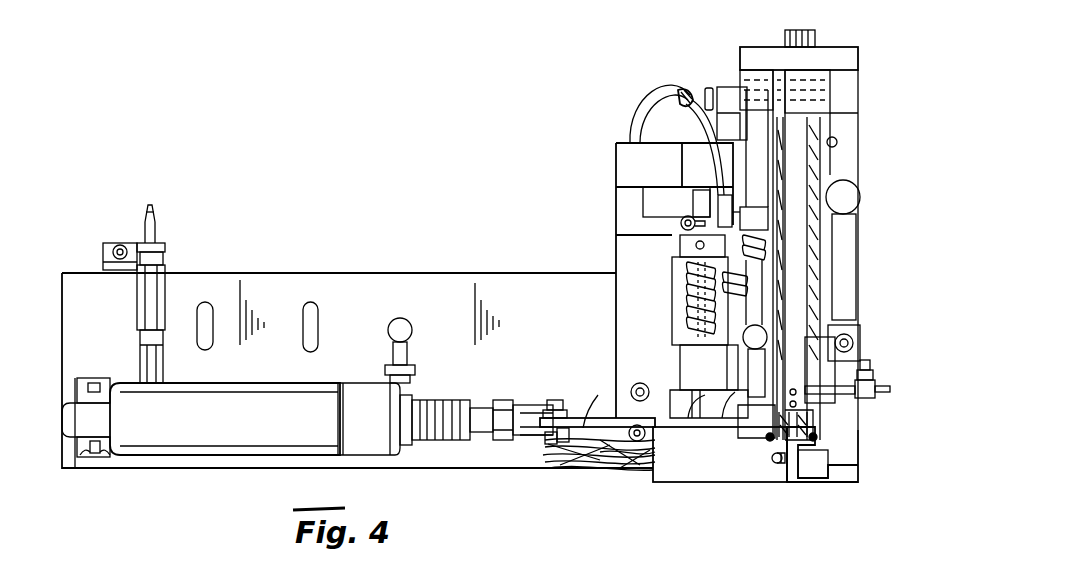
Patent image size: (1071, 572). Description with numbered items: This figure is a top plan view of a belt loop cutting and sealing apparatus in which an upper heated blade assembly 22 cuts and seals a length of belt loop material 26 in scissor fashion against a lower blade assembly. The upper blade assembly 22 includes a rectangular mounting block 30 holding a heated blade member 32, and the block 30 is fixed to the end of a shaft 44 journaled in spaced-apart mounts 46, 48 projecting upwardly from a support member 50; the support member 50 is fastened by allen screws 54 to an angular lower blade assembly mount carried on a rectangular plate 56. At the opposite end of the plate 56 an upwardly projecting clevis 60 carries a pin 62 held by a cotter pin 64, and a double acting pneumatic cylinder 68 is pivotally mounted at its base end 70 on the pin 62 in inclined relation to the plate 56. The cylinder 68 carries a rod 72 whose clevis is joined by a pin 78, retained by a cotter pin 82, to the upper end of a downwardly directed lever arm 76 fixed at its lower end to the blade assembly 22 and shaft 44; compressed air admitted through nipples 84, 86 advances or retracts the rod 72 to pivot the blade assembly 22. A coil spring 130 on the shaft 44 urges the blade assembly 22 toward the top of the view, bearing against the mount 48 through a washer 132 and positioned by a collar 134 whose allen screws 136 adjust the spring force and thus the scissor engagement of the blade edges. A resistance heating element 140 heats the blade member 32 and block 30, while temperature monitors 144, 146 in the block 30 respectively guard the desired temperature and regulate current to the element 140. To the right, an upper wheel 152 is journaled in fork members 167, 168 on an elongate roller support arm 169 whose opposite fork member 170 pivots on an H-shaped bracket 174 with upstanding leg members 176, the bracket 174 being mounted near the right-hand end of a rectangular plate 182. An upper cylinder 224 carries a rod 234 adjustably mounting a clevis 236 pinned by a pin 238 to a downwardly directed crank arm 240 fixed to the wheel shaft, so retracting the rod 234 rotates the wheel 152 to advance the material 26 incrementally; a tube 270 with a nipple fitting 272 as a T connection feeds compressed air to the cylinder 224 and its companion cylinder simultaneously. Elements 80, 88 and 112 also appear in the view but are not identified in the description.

The upper heated blade assembly 22 is at (776, 490).
The belt loop material 26 is at (828, 155).
The mounting block 30 is at (713, 488).
The heated blade member 32 is at (822, 470).
The shaft 44 is at (686, 405).
The mount 46 is at (702, 150).
The mount 48 is at (680, 373).
The support member 50 is at (608, 225).
The allen screws 54 is at (617, 416).
The rectangular plate 56 is at (308, 270).
The clevis 60 is at (78, 385).
The pin 62 is at (95, 381).
The cotter pin 64 is at (92, 455).
The double acting pneumatic cylinder 68 is at (220, 456).
The base end 70 is at (98, 440).
The rod 72 is at (470, 410).
The lever arm 76 is at (597, 401).
The pin 78 is at (551, 390).
The clevis 80 is at (560, 404).
The cotter pin 82 is at (540, 438).
The nipple 84 is at (152, 215).
The nipple 86 is at (392, 335).
The yoke 88 is at (500, 440).
The guide 112 is at (832, 432).
The coil spring 130 is at (680, 302).
The washer 132 is at (675, 342).
The collar 134 is at (674, 252).
The allen screws 136 is at (688, 222).
The resistance heating element 140 is at (606, 468).
The temperature monitor 144 is at (625, 447).
The temperature monitor 146 is at (637, 470).
The upper wheel 152 is at (820, 366).
The fork member 167 is at (776, 398).
The fork member 168 is at (840, 402).
The roller support arm 169 is at (792, 265).
The fork member 170 is at (776, 65).
The H-shaped bracket 174 is at (848, 86).
The leg member 176 is at (838, 80).
The rectangular plate 182 is at (866, 125).
The upper cylinder 224 is at (745, 132).
The rod 234 is at (764, 288).
The clevis 236 is at (726, 408).
The pin 238 is at (730, 380).
The crank arm 240 is at (759, 462).
The tube 270 is at (628, 100).
The nipple fitting 272 is at (668, 90).